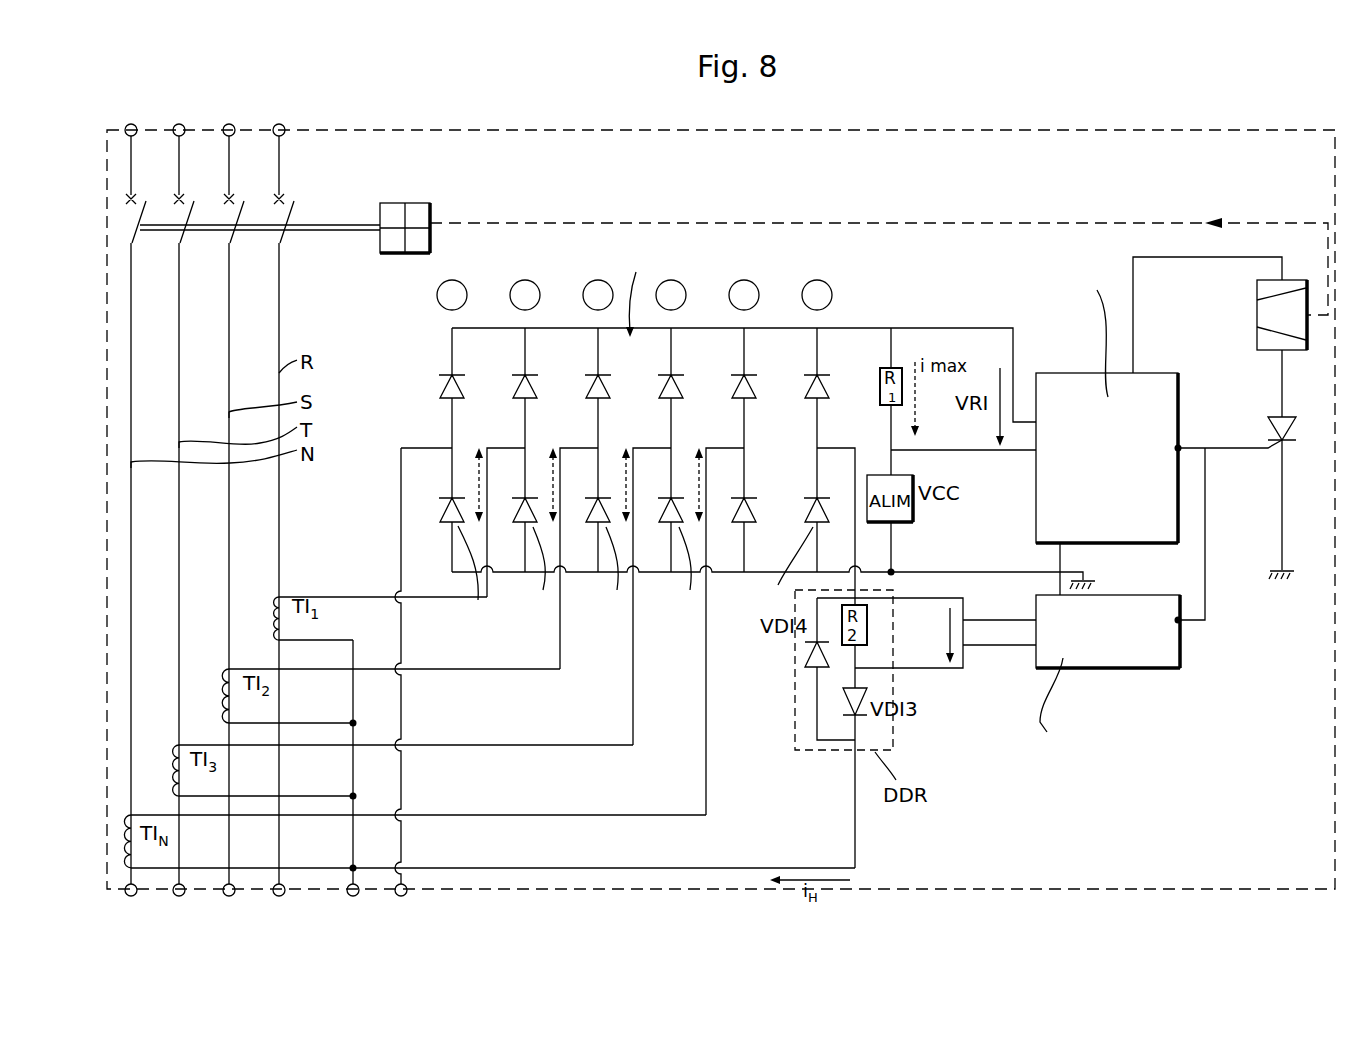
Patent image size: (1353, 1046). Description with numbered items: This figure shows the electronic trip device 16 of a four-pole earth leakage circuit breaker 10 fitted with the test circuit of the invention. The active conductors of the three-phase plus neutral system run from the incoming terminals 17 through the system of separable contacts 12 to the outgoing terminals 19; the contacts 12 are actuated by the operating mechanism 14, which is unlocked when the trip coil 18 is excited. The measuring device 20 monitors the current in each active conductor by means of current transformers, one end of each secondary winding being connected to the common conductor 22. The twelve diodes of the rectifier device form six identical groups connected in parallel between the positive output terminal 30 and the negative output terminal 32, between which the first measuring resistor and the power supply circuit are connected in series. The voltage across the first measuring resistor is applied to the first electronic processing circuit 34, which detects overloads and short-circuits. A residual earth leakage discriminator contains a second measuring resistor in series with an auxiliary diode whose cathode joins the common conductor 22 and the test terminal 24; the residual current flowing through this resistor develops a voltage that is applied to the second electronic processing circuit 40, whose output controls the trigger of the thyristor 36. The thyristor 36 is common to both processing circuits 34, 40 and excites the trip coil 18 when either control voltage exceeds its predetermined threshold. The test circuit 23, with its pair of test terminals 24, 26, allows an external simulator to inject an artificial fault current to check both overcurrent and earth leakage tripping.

The circuit breaker 10 is at (1160, 886).
The system of separable contacts 12 is at (307, 232).
The operating mechanism 14 is at (430, 221).
The electronic trip device 16 is at (929, 676).
The incoming terminals 17 is at (276, 124).
The trip coil 18 is at (1266, 316).
The outgoing terminals 19 is at (278, 895).
The measuring device 20 is at (589, 302).
The common conductor 22 is at (352, 843).
The test circuit 23 is at (372, 921).
The test terminal 24 is at (352, 896).
The test terminal 26 is at (405, 895).
The positive output terminal 30 is at (892, 327).
The negative output terminal 32 is at (893, 569).
The first electronic processing circuit 34 is at (1088, 373).
The thyristor 36 is at (1275, 417).
The second electronic processing circuit 40 is at (1097, 668).